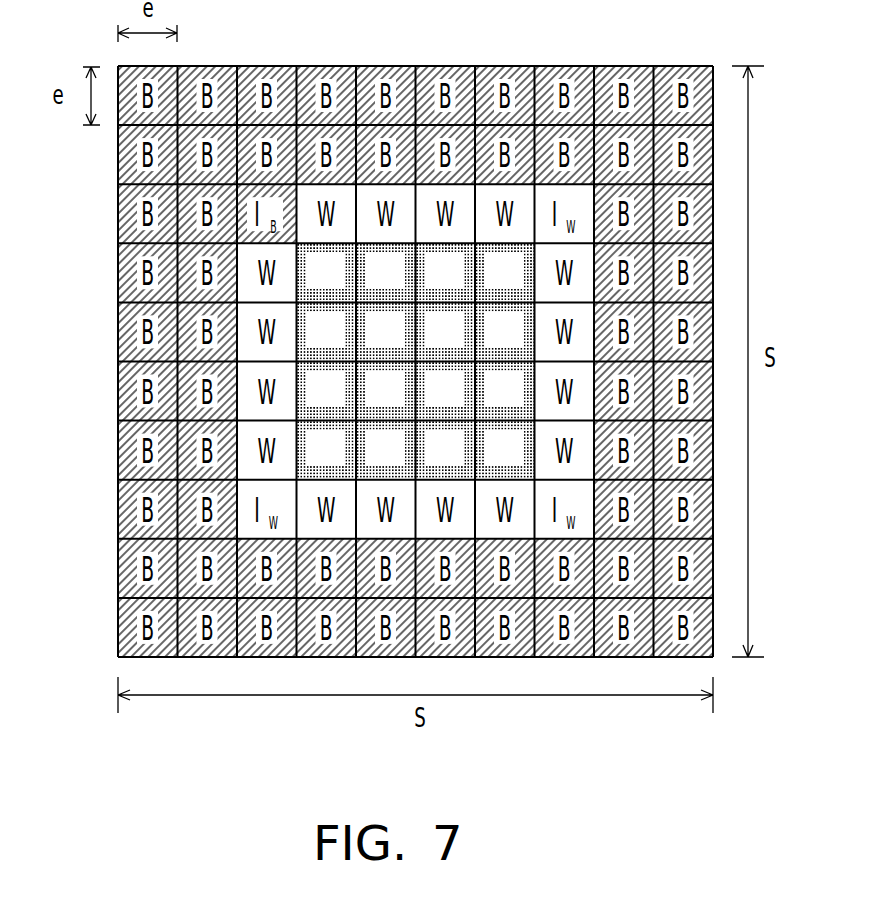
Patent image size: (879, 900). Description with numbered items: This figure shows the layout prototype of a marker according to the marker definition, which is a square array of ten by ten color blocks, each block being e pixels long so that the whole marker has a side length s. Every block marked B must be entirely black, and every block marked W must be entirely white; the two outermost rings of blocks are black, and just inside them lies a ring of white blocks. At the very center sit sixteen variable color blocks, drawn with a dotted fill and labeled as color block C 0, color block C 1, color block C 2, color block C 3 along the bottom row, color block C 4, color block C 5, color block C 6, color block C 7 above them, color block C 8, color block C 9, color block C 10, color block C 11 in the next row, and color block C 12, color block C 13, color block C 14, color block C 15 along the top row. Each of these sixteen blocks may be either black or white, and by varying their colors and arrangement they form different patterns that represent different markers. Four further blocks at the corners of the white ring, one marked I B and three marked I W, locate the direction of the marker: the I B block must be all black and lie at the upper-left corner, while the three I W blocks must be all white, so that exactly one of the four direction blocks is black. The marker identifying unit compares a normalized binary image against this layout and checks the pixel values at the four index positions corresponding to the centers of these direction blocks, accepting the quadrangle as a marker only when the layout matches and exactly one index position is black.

The color block C0 0 is at (505, 450).
The color block C1 1 is at (446, 450).
The color block C2 2 is at (386, 450).
The color block C3 3 is at (327, 450).
The color block C4 4 is at (505, 391).
The color block C5 5 is at (446, 391).
The color block C6 6 is at (386, 391).
The color block C7 7 is at (327, 391).
The color block C8 8 is at (505, 331).
The color block C9 9 is at (446, 331).
The color block C10 10 is at (386, 331).
The color block C11 11 is at (327, 331).
The color block C12 12 is at (505, 272).
The color block C13 13 is at (446, 272).
The color block C14 14 is at (386, 272).
The color block C15 15 is at (327, 272).